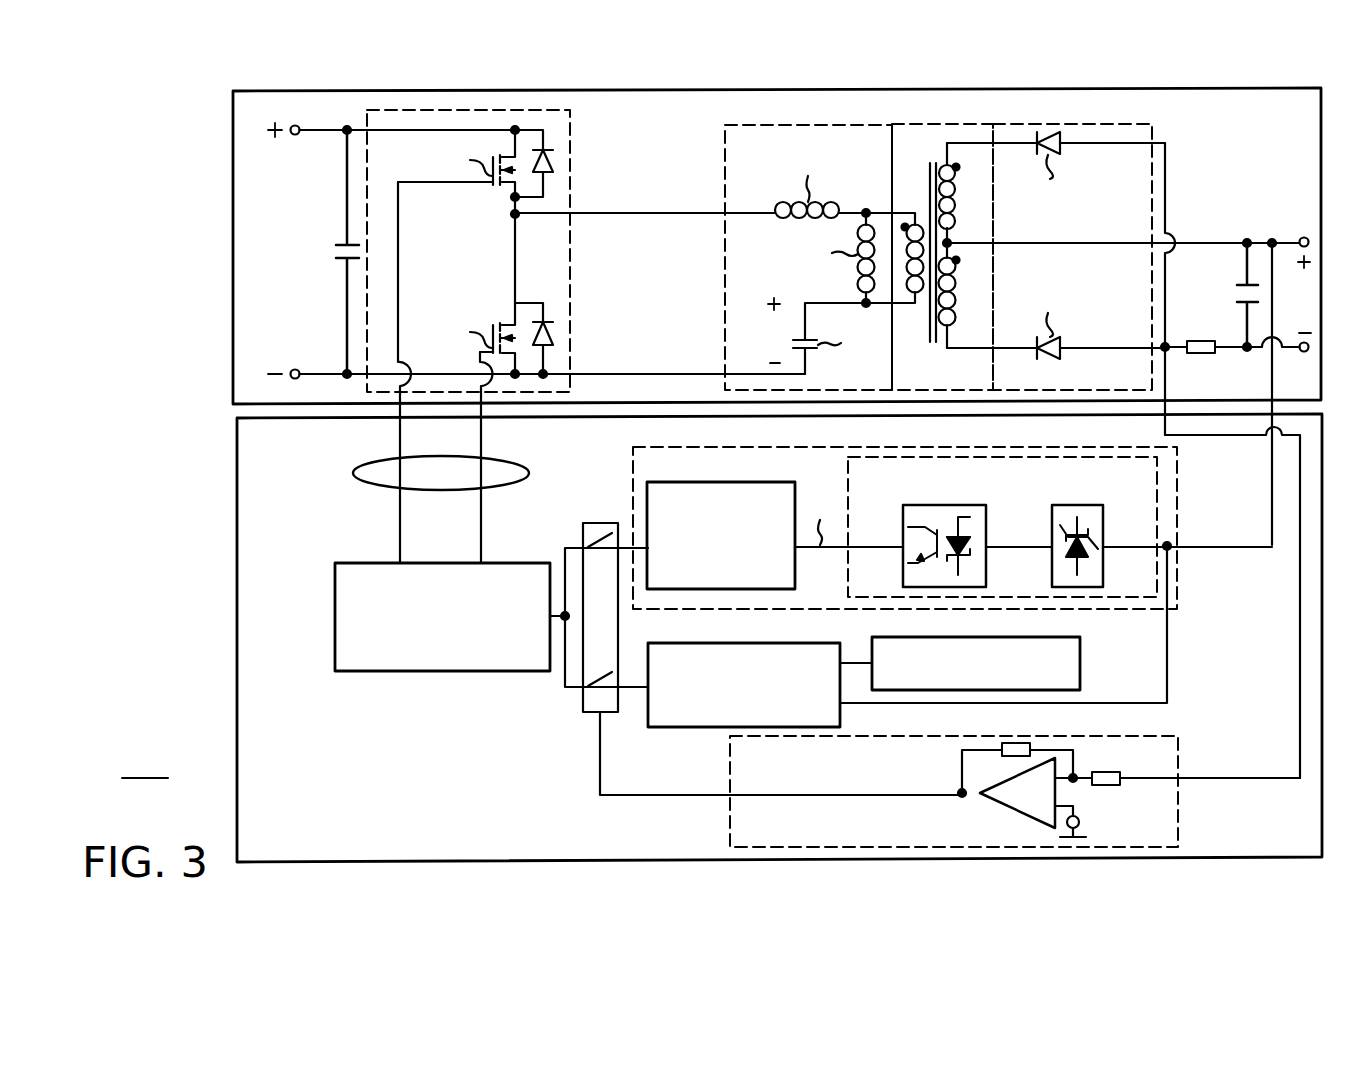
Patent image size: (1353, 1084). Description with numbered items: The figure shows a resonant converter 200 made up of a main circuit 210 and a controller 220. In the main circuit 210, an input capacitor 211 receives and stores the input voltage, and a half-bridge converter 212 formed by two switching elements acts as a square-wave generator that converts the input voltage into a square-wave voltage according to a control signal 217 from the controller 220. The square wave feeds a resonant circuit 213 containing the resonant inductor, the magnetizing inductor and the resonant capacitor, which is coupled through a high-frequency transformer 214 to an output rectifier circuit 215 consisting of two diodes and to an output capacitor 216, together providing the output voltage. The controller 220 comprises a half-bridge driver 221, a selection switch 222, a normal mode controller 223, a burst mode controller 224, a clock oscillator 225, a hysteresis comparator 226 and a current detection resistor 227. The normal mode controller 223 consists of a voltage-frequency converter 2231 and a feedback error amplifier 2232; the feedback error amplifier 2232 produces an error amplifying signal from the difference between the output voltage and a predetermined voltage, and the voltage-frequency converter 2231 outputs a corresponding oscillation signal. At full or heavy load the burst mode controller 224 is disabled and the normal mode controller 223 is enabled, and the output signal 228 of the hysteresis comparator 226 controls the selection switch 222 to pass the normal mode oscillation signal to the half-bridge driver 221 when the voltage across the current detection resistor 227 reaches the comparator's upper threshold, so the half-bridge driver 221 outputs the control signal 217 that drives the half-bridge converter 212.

The resonant converter 200 is at (722, 475).
The main circuit 210 is at (233, 122).
The input capacitor 211 is at (340, 244).
The half-bridge converter 212 is at (583, 123).
The resonant circuit 213 is at (807, 125).
The high-frequency transformer 214 is at (942, 122).
The output rectifier circuit 215 is at (1072, 122).
The output capacitor 216 is at (1243, 283).
The control signal 217 is at (353, 473).
The controller 220 is at (237, 449).
The half-bridge driver 221 is at (444, 673).
The selection switch 222 is at (600, 522).
The normal mode controller 223 is at (1180, 462).
The voltage-frequency converter 2231 is at (650, 482).
The feedback error amplifier 2232 is at (1158, 497).
The burst mode controller 224 is at (650, 643).
The clock oscillator 225 is at (1082, 663).
The hysteresis comparator 226 is at (1180, 750).
The current detection resistor 227 is at (1200, 340).
The output signal 228 is at (643, 792).